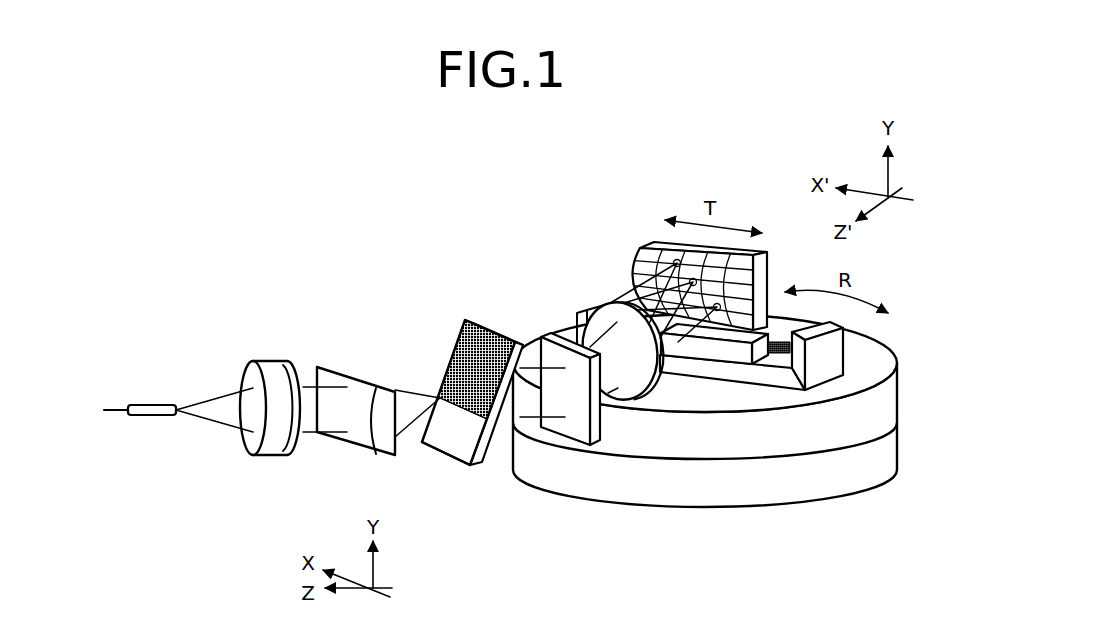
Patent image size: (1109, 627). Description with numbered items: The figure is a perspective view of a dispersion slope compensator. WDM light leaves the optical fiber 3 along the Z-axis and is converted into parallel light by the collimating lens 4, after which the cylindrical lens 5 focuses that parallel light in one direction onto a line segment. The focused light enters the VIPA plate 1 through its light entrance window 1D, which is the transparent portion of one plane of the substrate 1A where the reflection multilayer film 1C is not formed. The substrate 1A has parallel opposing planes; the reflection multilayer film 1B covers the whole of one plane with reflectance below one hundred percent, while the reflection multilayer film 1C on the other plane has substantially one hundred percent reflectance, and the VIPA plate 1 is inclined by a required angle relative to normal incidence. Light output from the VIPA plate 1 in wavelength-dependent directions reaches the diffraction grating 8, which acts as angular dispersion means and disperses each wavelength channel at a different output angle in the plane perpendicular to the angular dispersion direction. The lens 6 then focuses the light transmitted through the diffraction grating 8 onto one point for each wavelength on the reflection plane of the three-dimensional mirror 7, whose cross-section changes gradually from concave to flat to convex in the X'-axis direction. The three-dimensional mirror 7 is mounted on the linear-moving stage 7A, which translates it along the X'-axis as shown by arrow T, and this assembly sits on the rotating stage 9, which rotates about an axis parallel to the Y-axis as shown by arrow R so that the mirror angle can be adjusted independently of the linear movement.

The VIPA plate 1 is at (472, 393).
The substrate 1A is at (482, 467).
The reflection multilayer film 1B is at (497, 442).
The reflection multilayer film 1C is at (460, 352).
The light entrance window 1D is at (453, 432).
The optical fiber 3 is at (150, 402).
The collimating lens 4 is at (262, 362).
The cylindrical lens 5 is at (337, 363).
The lens 6 is at (614, 298).
The three-dimensional mirror 7 is at (643, 248).
The linear-moving stage 7A is at (827, 360).
The diffraction grating 8 is at (560, 332).
The rotating stage 9 is at (813, 480).